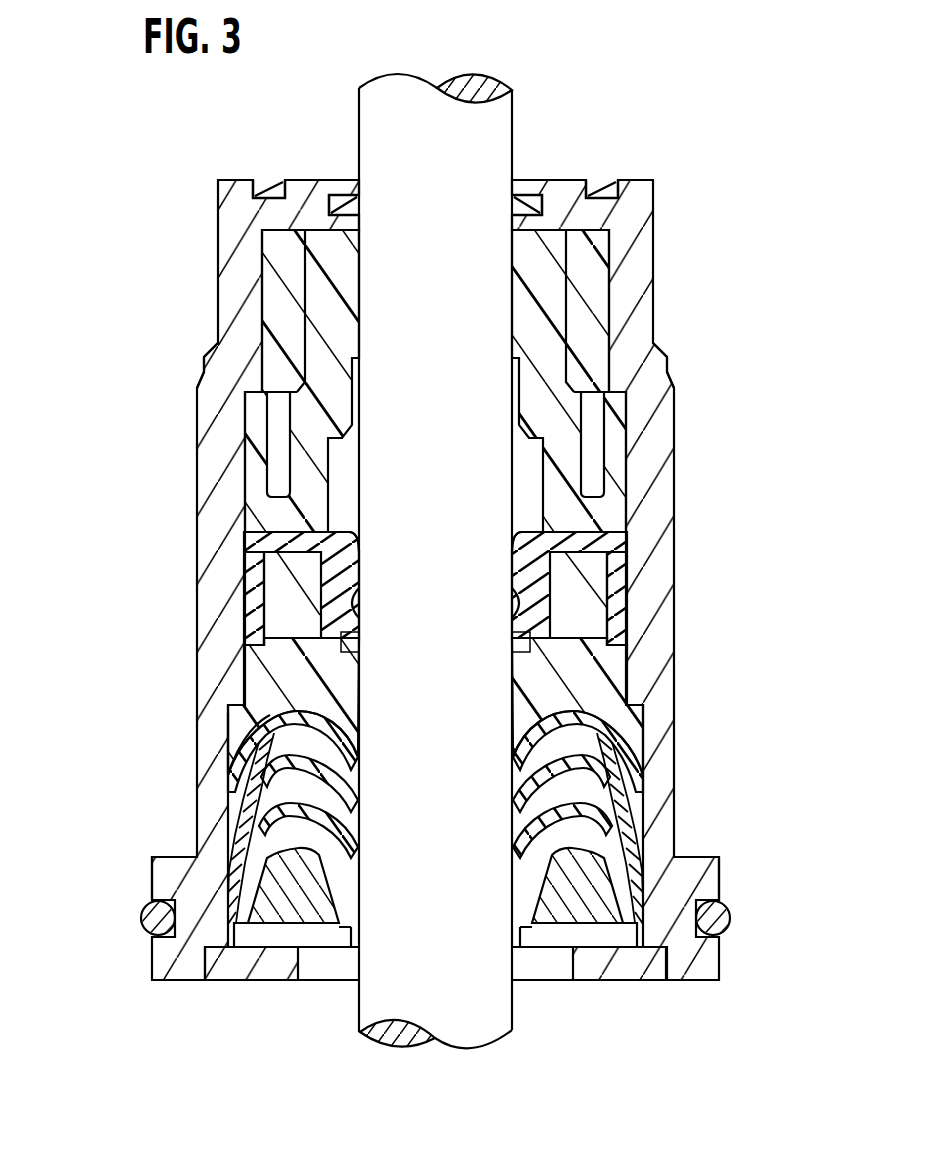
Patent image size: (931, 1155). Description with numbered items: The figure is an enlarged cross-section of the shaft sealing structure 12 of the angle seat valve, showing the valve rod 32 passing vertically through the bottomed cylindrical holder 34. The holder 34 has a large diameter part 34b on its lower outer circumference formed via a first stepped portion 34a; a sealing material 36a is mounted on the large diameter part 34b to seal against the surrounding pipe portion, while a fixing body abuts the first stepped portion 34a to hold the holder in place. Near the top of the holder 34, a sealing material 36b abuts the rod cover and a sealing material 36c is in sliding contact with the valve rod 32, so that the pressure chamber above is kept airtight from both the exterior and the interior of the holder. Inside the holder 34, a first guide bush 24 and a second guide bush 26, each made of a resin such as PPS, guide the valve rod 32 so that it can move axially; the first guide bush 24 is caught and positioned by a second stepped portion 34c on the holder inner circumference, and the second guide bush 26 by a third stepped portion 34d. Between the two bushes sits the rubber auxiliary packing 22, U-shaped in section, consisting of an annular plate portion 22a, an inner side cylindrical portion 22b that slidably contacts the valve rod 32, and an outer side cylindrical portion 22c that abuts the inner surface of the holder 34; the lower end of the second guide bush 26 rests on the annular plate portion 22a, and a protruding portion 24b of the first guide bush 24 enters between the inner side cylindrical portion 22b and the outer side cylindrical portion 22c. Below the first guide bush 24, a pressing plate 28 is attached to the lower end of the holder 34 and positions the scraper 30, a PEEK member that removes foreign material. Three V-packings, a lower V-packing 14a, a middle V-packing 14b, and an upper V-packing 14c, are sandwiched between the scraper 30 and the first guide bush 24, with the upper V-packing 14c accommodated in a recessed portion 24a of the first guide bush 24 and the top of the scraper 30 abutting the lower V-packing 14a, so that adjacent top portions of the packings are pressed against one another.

The shaft sealing structure 12 is at (660, 64).
The lower V-packing 14a is at (610, 838).
The middle V-packing 14b is at (600, 792).
The upper V-packing 14c is at (605, 745).
The auxiliary packing 22 is at (508, 566).
The annular plate portion 22a is at (578, 538).
The inner side cylindrical portion 22b is at (522, 601).
The outer side cylindrical portion 22c is at (620, 572).
The first guide bush 24 is at (295, 670).
The recessed portion 24a is at (268, 743).
The protruding portion 24b is at (275, 582).
The second guide bush 26 is at (317, 292).
The pressing plate 28 is at (262, 978).
The scraper 30 is at (310, 900).
The valve rod 32 is at (498, 124).
The holder 34 is at (655, 321).
The first stepped portion 34a is at (172, 857).
The large diameter part 34b is at (167, 881).
The second stepped portion 34c is at (645, 703).
The third stepped portion 34d is at (612, 400).
The sealing material 36a is at (142, 920).
The sealing material 36b is at (263, 182).
The sealing material 36c is at (340, 195).